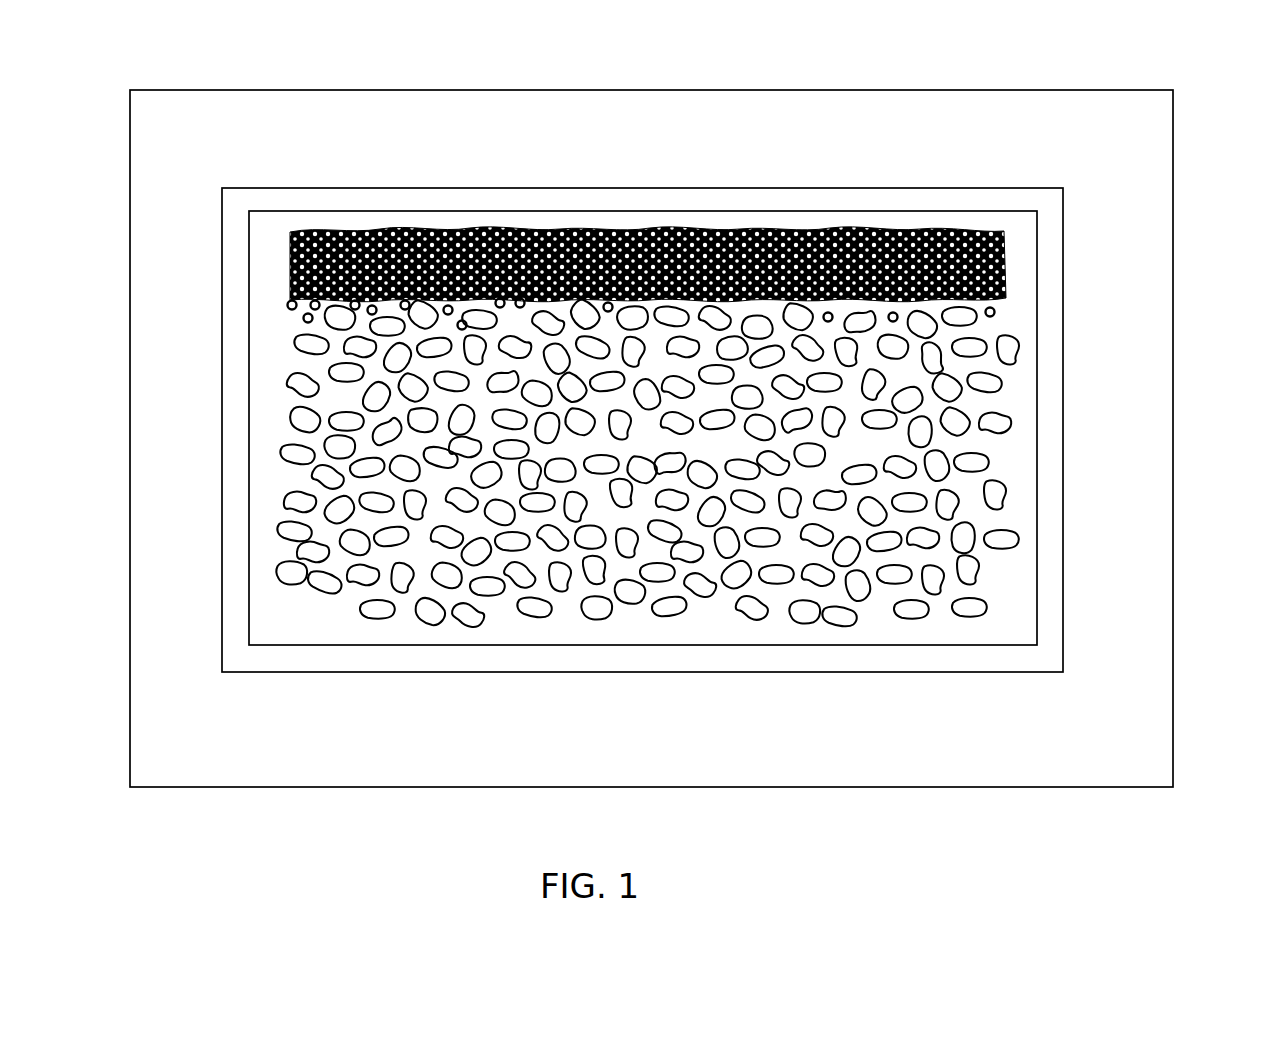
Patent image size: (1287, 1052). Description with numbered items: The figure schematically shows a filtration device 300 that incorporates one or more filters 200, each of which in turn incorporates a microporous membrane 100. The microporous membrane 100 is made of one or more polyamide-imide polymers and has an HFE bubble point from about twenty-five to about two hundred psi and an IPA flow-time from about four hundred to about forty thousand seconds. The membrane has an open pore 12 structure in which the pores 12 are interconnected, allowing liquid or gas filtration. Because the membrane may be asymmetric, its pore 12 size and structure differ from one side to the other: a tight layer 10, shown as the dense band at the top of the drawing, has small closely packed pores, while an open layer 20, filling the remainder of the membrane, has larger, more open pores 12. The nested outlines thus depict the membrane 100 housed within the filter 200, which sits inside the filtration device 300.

The filtration device 300 is at (1175, 135).
The filter 200 is at (340, 187).
The microporous membrane 100 is at (367, 642).
The tight layer 10 is at (1020, 315).
The open layer 20 is at (278, 292).
The pore 12 is at (933, 583).